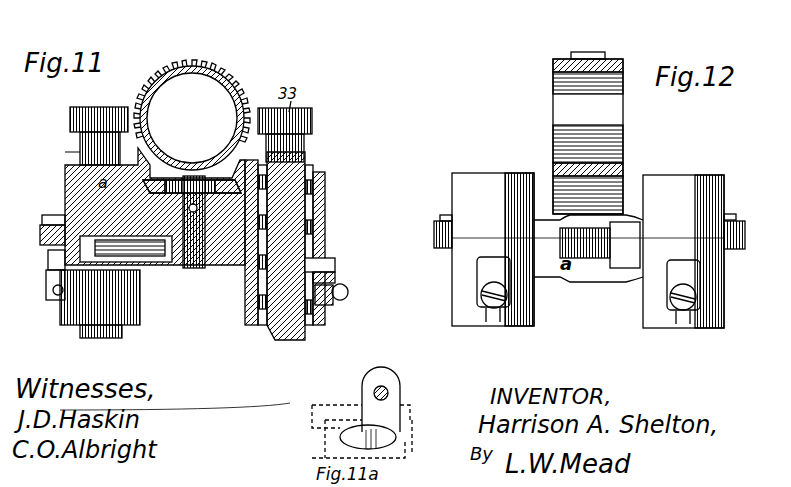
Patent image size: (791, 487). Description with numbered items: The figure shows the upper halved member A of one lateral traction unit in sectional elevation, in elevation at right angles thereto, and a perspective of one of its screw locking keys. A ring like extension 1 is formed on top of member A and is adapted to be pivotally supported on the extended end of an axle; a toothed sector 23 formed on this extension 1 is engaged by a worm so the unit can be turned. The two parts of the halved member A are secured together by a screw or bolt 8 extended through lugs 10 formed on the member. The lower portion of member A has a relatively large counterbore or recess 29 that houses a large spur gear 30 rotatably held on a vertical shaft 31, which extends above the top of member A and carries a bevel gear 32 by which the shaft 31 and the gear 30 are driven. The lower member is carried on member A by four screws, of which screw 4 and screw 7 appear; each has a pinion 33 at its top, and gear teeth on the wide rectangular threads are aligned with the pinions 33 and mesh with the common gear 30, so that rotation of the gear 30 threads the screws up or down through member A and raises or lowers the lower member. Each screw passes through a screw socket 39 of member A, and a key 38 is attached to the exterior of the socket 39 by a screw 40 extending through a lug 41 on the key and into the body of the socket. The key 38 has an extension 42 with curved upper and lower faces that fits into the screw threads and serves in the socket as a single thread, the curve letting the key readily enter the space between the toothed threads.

In FIG. 11, the ring like extension 1 is at (172, 124).
In FIG. 12, the ring like extension 1 is at (588, 136).
In FIG. 11, the sector 23 is at (236, 80).
In FIG. 12, the sector 23 is at (597, 53).
In FIG. 11, the pinion 33 is at (104, 110).
In FIG. 11, the bevel gear 32 is at (206, 178).
In FIG. 11, the vertical shaft 31 is at (186, 270).
In FIG. 11, the counterbore or recess 29 is at (148, 268).
In FIG. 11, the screw 4 is at (80, 152).
In FIG. 11A, the screw 4 is at (362, 431).
In FIG. 11, the screw socket 39 is at (250, 318).
In FIG. 12, the screw socket 39 is at (588, 250).
In FIG. 11, the screw or bolt 8 is at (48, 215).
In FIG. 12, the screw or bolt 8 is at (444, 215).
In FIG. 11, the lug 10 is at (40, 238).
In FIG. 12, the lug 10 is at (442, 250).
In FIG. 11, the spur gear 30 is at (48, 262).
In FIG. 11, the screw 40 is at (46, 282).
In FIG. 12, the screw 40 is at (500, 318).
In FIG. 11, the lug 41 is at (50, 300).
In FIG. 12, the lug 41 is at (481, 296).
In FIG. 11A, the lug 41 is at (387, 380).
In FIG. 11, the screw 7 is at (304, 172).
In FIG. 11, the extension 42 is at (322, 260).
In FIG. 11A, the extension 42 is at (345, 440).
In FIG. 11, the key 38 is at (334, 278).
In FIG. 12, the key 38 is at (588, 283).
In FIG. 11A, the key 38 is at (395, 399).